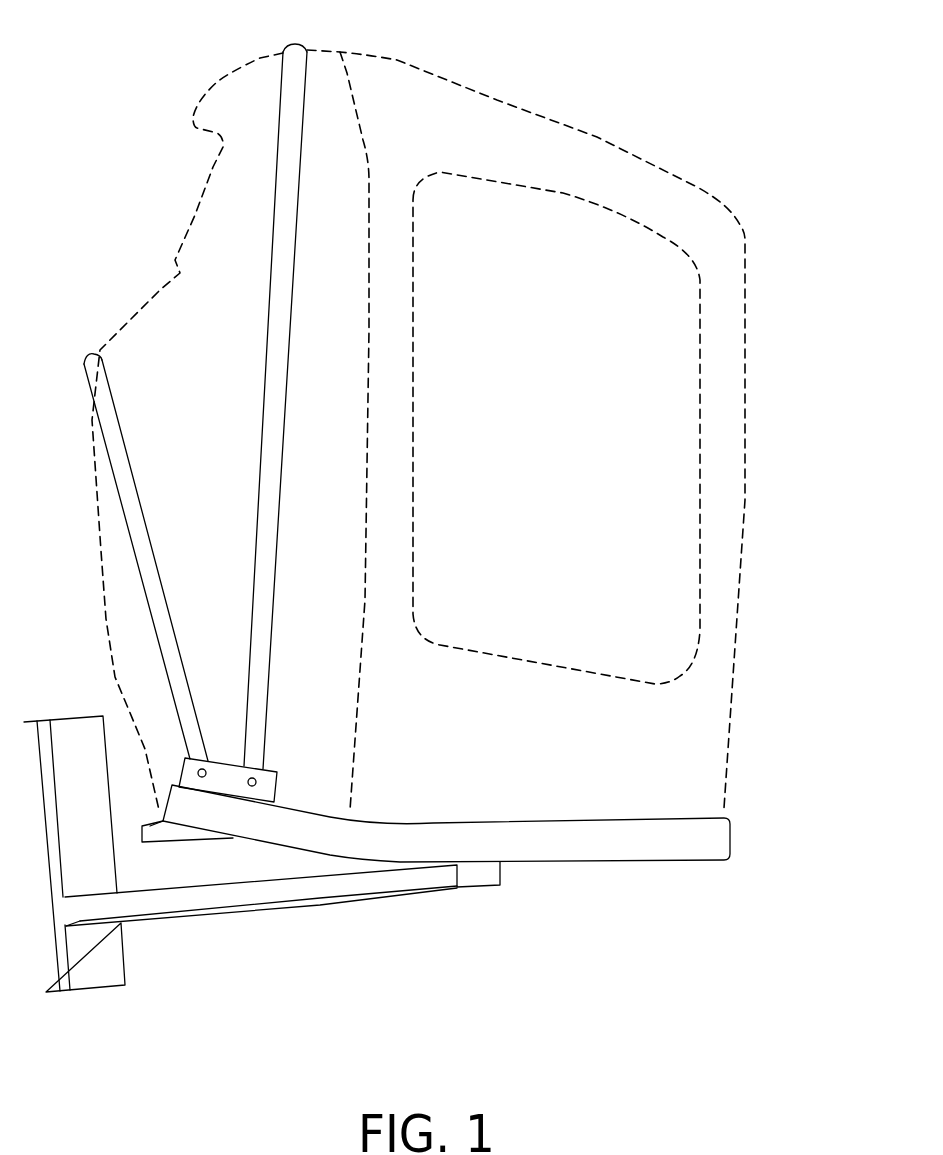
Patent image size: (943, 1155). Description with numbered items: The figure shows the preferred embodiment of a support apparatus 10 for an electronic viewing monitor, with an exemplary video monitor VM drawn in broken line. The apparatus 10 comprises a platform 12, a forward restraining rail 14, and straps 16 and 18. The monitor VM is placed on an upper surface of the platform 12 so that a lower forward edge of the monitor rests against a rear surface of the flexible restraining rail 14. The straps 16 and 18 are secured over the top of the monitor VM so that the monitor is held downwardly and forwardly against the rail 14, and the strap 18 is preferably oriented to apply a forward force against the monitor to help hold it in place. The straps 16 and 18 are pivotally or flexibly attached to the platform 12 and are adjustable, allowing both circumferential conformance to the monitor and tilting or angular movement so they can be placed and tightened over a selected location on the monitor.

The apparatus 10 is at (811, 76).
The platform 12 is at (610, 892).
The forward restraining rail 14 is at (715, 842).
The strap 16 is at (272, 597).
The forward strap 18 is at (167, 597).
The electronic viewing monitor VM is at (747, 378).